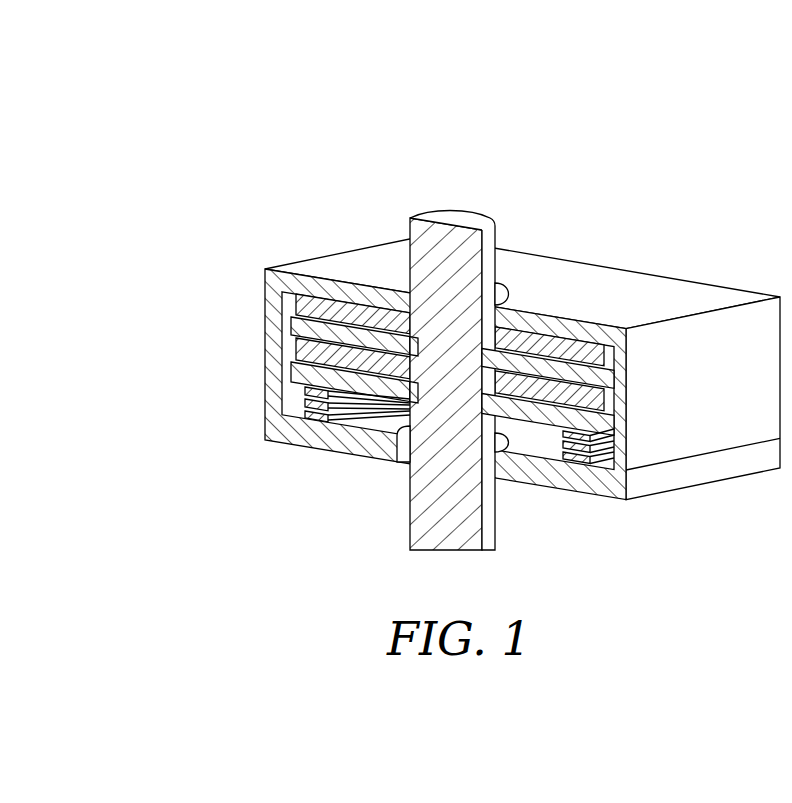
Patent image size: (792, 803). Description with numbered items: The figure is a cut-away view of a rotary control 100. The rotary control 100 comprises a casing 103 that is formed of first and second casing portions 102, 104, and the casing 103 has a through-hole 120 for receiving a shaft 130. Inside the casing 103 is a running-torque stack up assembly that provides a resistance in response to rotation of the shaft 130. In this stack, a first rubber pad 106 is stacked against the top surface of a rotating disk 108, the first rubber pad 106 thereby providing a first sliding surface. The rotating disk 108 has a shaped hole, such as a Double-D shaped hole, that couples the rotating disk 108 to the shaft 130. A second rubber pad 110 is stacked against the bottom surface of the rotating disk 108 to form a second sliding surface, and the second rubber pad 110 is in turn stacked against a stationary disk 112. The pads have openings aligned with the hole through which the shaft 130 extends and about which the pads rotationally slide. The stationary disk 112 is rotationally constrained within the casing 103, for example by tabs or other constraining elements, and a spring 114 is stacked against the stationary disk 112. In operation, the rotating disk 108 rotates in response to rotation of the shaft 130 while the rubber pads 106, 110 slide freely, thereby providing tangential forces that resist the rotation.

The rotary control 100 is at (275, 569).
The first casing portion 102 is at (265, 340).
The casing 103 is at (276, 366).
The second casing portion 104 is at (192, 323).
The first rubber pad 106 is at (565, 335).
The rotating disk 108 is at (622, 410).
The second rubber pad 110 is at (578, 400).
The stationary disk 112 is at (535, 414).
The spring 114 is at (316, 428).
The through-hole 120 is at (497, 302).
The shaft 130 is at (470, 212).